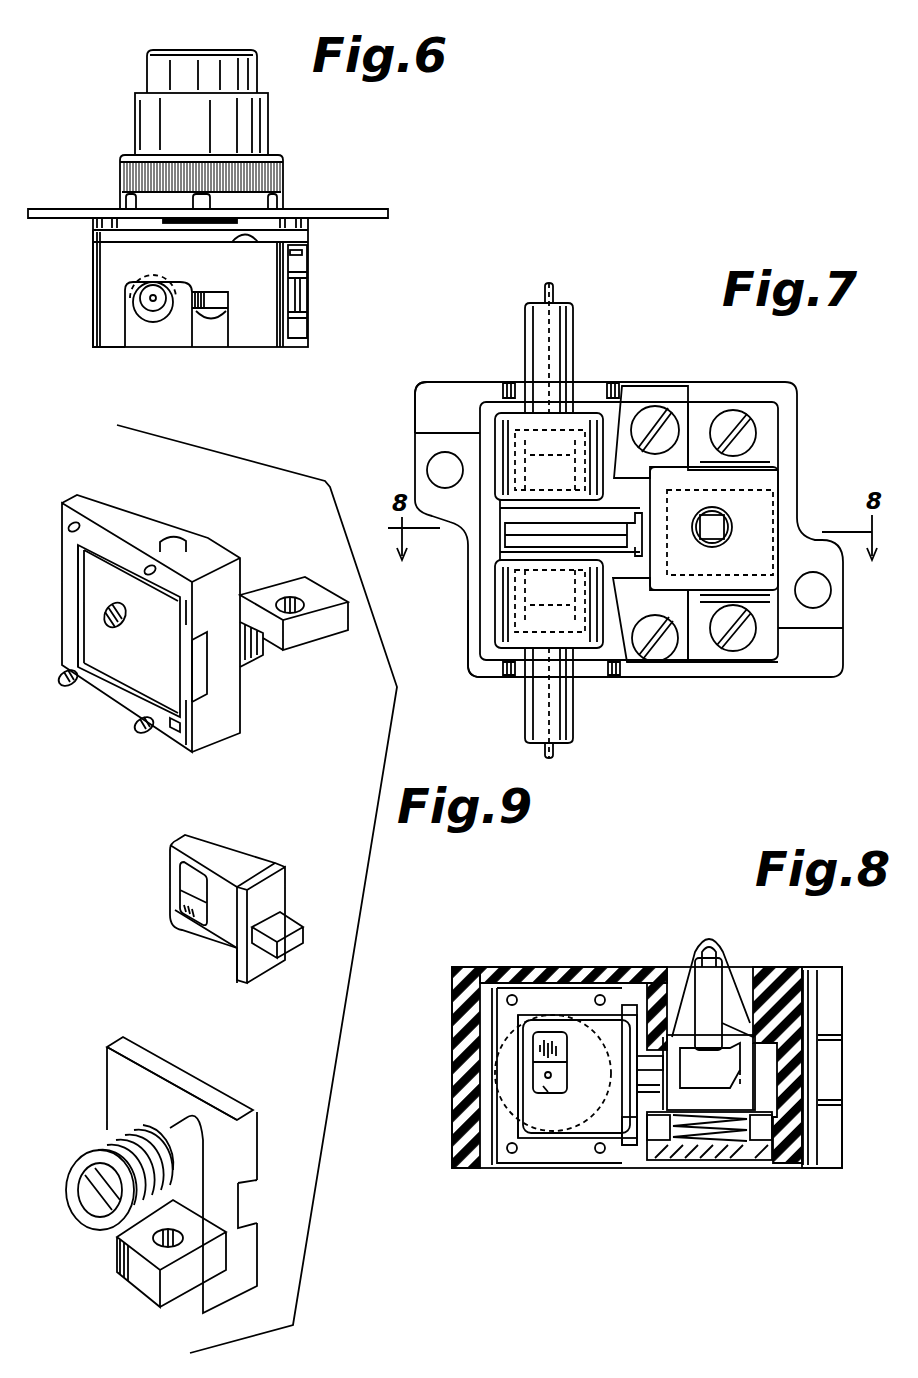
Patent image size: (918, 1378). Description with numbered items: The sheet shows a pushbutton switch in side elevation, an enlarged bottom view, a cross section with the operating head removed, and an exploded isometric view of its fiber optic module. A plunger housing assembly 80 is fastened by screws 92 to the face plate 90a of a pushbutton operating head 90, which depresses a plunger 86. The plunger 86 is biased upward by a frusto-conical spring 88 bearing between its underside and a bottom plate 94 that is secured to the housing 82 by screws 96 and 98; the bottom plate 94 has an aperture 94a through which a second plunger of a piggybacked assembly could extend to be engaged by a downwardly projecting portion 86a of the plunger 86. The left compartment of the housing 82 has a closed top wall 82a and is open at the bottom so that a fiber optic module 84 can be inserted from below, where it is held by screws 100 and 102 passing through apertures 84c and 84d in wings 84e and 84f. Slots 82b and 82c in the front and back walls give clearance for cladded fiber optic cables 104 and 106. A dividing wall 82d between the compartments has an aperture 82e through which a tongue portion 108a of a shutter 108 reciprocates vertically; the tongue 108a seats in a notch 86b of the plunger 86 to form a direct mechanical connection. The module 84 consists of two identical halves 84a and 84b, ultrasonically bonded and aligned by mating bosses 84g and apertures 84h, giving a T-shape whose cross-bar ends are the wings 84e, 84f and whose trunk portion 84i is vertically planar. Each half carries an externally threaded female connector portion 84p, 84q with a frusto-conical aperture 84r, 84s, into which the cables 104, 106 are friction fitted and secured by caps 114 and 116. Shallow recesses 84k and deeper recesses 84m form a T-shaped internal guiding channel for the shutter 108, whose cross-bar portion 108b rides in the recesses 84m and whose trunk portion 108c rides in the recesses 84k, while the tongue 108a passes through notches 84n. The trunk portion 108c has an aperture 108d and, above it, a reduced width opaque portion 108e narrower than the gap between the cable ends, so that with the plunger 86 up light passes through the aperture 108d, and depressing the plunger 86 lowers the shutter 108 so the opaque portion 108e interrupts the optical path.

In FIG. 6, the plunger housing assembly 80 is at (80, 271).
In FIG. 6, the housing 82 is at (262, 328).
In FIG. 7, the housing 82 is at (822, 665).
In FIG. 8, the housing 82 is at (458, 1115).
In FIG. 8, the closed top wall 82a is at (520, 970).
In FIG. 6, the slot 82b is at (128, 327).
In FIG. 7, the slot 82b is at (515, 398).
In FIG. 7, the slot 82c is at (518, 672).
In FIG. 8, the dividing wall 82d is at (672, 1023).
In FIG. 8, the aperture 82e is at (622, 1083).
In FIG. 8, the fiber optic module 84 is at (490, 968).
In FIG. 6, the module half 84a is at (173, 335).
In FIG. 9, the module half 84a is at (107, 1078).
In FIG. 9, the module half 84b is at (68, 600).
In FIG. 9, the aperture 84c is at (160, 1233).
In FIG. 9, the aperture 84d is at (282, 600).
In FIG. 6, the wing 84e is at (200, 292).
In FIG. 7, the wing 84e is at (638, 393).
In FIG. 9, the wing 84e is at (145, 1280).
In FIG. 7, the wing 84f is at (635, 661).
In FIG. 9, the wing 84f is at (303, 587).
In FIG. 9, the boss 84g is at (67, 688).
In FIG. 9, the aperture 84h is at (68, 528).
In FIG. 7, the trunk portion 84i is at (500, 540).
In FIG. 9, the recessed shallow cavity 84k is at (80, 638).
In FIG. 8, the recessed shallow cavity 84k is at (518, 1018).
In FIG. 9, the deeper recess 84m is at (175, 732).
In FIG. 8, the deeper recess 84m is at (628, 1150).
In FIG. 9, the notch 84n is at (205, 677).
In FIG. 8, the notch 84n is at (640, 1094).
In FIG. 9, the female fiber optic connector portion 84p is at (73, 1163).
In FIG. 9, the female fiber optic connector portion 84q is at (182, 546).
In FIG. 9, the frusto-conical aperture 84r is at (100, 1186).
In FIG. 9, the frusto-conical aperture 84s is at (118, 628).
In FIG. 6, the plunger 86 is at (242, 247).
In FIG. 8, the plunger 86 is at (717, 950).
In FIG. 7, the downwardly projecting portion 86a is at (718, 522).
In FIG. 8, the downwardly projecting portion 86a is at (722, 1140).
In FIG. 8, the notch 86b is at (687, 1027).
In FIG. 8, the frusto-conical spring 88 is at (737, 1142).
In FIG. 6, the pushbutton operating head 90 is at (283, 129).
In FIG. 6, the face plate 90a is at (300, 210).
In FIG. 6, the screw 92 is at (307, 328).
In FIG. 7, the bottom plate 94 is at (768, 441).
In FIG. 8, the bottom plate 94 is at (762, 1153).
In FIG. 7, the aperture 94a is at (745, 528).
In FIG. 8, the aperture 94a is at (688, 1158).
In FIG. 7, the screw 96 is at (735, 413).
In FIG. 7, the screw 98 is at (737, 642).
In FIG. 6, the screw 100 is at (217, 314).
In FIG. 7, the screw 100 is at (660, 410).
In FIG. 7, the screw 102 is at (663, 652).
In FIG. 6, the fiber optic cable 104 is at (153, 300).
In FIG. 7, the fiber optic cable 104 is at (556, 301).
In FIG. 7, the fiber optic cable 106 is at (556, 747).
In FIG. 8, the fiber optic cable 106 is at (545, 1075).
In FIG. 9, the shutter 108 is at (290, 888).
In FIG. 9, the tongue portion 108a is at (283, 928).
In FIG. 8, the tongue portion 108a is at (643, 1056).
In FIG. 9, the cross-bar portion 108b is at (268, 865).
In FIG. 8, the cross-bar portion 108b is at (625, 1140).
In FIG. 9, the trunk portion 108c is at (217, 868).
In FIG. 8, the trunk portion 108c is at (590, 1027).
In FIG. 9, the aperture 108d is at (195, 915).
In FIG. 8, the aperture 108d is at (550, 1093).
In FIG. 9, the reduced width opaque portion 108e is at (187, 872).
In FIG. 8, the reduced width opaque portion 108e is at (537, 1048).
In FIG. 7, the cap 114 is at (583, 423).
In FIG. 7, the cap 116 is at (503, 608).